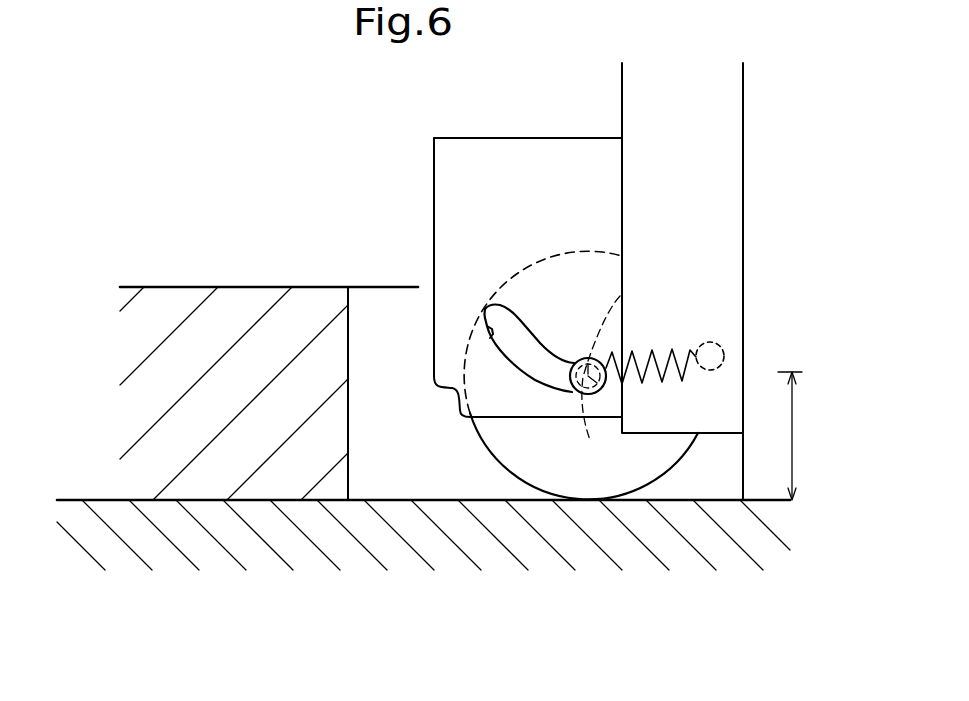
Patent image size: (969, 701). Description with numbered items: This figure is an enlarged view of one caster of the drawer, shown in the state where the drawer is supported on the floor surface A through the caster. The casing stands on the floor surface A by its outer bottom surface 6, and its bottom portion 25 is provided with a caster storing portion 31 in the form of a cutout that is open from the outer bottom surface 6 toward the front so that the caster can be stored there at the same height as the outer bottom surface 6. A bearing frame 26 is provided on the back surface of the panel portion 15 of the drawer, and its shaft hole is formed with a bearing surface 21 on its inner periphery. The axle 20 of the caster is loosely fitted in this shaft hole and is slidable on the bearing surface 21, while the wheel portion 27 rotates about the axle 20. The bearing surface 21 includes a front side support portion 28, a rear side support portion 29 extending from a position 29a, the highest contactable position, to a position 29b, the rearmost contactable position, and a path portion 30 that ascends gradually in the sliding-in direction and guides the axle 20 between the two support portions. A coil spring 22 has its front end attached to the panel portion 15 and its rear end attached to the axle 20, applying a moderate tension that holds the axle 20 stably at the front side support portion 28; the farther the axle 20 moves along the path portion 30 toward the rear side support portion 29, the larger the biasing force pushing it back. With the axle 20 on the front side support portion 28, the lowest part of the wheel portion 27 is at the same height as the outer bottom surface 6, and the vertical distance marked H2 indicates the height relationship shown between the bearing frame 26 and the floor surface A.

The outer bottom surface 6 is at (255, 500).
The panel portion 15 is at (713, 146).
The axle 20 is at (622, 298).
The bearing surface 21 is at (513, 612).
The spring 22 is at (690, 322).
The bottom portion 25 is at (150, 318).
The bearing frame 26 is at (568, 158).
The wheel portion 27 is at (492, 434).
The front side support portion 28 is at (590, 440).
The rear side support portion 29 is at (487, 307).
The position 29a is at (485, 305).
The position 29b is at (487, 338).
The path portion 30 is at (545, 340).
The caster storing portion 31 is at (350, 440).
The floor surface A is at (482, 500).
The height H2 is at (805, 436).